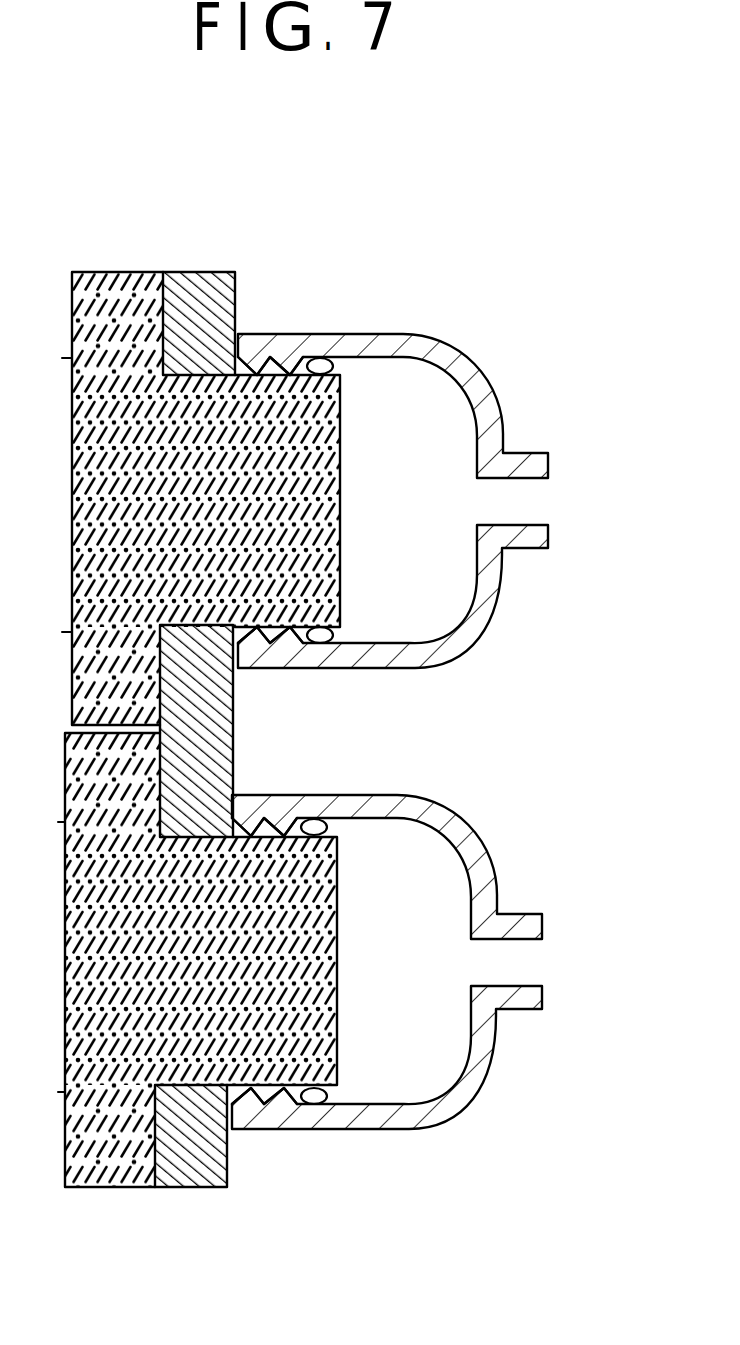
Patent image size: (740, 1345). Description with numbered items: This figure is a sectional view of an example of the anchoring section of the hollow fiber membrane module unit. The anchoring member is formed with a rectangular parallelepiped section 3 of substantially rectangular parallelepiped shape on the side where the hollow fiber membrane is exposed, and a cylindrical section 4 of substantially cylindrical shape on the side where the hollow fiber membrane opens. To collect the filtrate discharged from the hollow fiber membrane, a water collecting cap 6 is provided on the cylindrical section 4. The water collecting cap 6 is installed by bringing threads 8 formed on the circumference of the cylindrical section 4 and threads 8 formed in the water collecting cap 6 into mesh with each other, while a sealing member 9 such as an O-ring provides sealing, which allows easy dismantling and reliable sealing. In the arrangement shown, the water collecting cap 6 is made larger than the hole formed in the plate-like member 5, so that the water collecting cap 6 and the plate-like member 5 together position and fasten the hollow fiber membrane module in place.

The rectangular parallelepiped section 3 is at (104, 290).
The cylindrical section 4 is at (342, 490).
The plate-like member 5 is at (195, 290).
The water collecting cap 6 is at (540, 535).
The threads 8 is at (262, 355).
The sealing member 9 is at (325, 360).